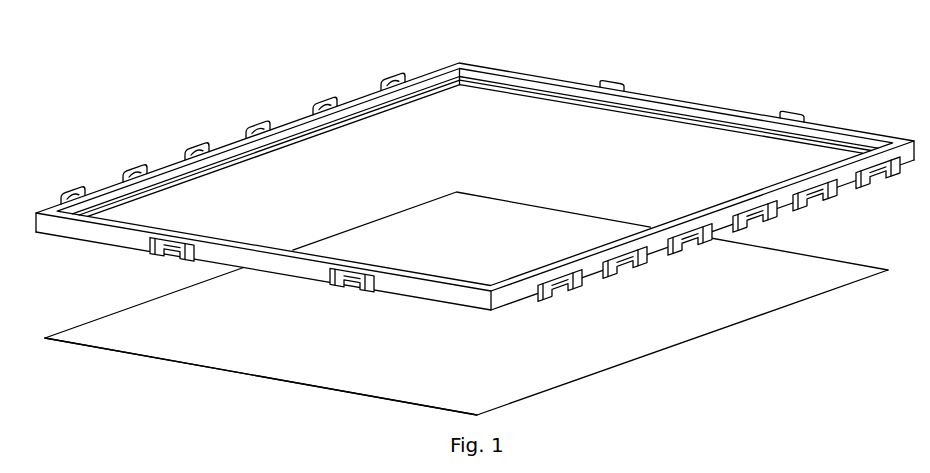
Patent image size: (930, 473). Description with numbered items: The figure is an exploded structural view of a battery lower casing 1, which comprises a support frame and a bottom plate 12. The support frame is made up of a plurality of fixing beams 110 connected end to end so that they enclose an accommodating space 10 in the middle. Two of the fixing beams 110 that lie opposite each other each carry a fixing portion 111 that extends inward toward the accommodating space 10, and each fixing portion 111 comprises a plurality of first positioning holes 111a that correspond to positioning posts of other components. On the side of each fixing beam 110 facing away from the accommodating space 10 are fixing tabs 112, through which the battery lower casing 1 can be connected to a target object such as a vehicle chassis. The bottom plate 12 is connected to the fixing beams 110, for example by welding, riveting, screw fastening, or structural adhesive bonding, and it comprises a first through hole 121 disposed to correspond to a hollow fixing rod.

The battery lower casing 1 is at (483, 36).
The accommodating space 10 is at (508, 108).
The fixing beam 110 is at (245, 140).
The fixing portion 111 is at (253, 165).
The first positioning hole 111a is at (358, 128).
The fixing tab 112 is at (128, 170).
The bottom plate 12 is at (652, 340).
The first through hole 121 is at (407, 347).